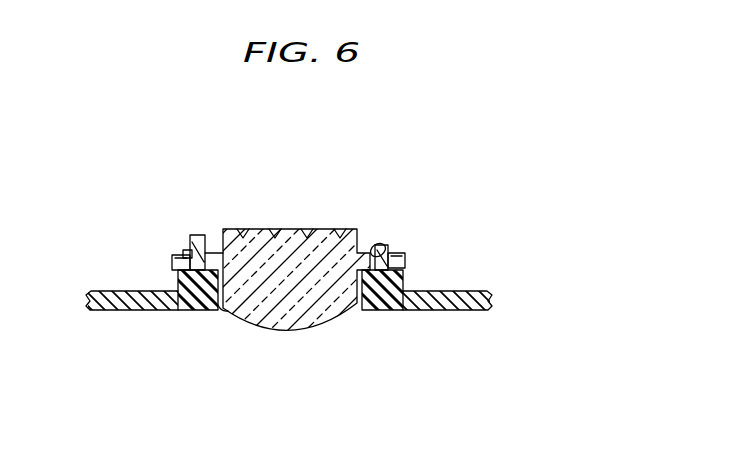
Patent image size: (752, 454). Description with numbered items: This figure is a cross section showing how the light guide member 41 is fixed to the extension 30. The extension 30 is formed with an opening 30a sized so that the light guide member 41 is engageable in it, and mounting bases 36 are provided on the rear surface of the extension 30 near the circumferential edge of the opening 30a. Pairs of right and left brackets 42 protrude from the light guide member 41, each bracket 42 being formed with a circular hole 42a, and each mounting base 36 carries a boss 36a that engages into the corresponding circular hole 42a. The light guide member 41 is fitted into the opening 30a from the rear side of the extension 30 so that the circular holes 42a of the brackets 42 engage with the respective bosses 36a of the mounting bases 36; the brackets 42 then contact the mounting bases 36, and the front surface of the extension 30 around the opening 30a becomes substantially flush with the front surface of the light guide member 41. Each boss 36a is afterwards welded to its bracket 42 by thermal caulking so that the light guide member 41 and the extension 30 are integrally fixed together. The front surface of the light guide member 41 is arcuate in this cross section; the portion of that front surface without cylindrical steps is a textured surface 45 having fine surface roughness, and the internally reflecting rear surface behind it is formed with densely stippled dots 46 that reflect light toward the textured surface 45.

The extension 30 is at (436, 310).
The opening 30a is at (224, 309).
The mounting base 36 is at (178, 284).
The boss 36a is at (199, 234).
The light guide member 41 is at (268, 285).
The bracket 42 is at (172, 260).
The circular hole 42a is at (191, 247).
The textured surface 45 is at (270, 322).
The stippled dots 46 is at (337, 226).